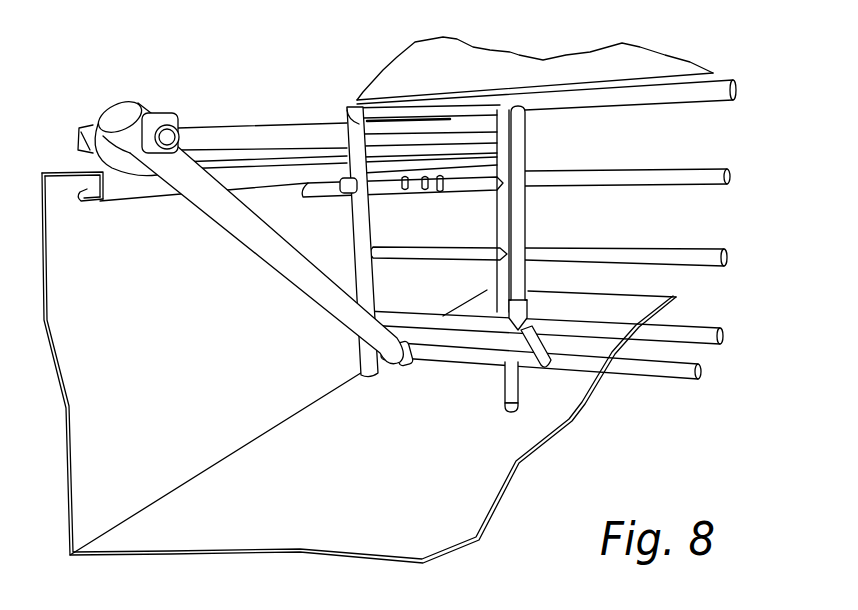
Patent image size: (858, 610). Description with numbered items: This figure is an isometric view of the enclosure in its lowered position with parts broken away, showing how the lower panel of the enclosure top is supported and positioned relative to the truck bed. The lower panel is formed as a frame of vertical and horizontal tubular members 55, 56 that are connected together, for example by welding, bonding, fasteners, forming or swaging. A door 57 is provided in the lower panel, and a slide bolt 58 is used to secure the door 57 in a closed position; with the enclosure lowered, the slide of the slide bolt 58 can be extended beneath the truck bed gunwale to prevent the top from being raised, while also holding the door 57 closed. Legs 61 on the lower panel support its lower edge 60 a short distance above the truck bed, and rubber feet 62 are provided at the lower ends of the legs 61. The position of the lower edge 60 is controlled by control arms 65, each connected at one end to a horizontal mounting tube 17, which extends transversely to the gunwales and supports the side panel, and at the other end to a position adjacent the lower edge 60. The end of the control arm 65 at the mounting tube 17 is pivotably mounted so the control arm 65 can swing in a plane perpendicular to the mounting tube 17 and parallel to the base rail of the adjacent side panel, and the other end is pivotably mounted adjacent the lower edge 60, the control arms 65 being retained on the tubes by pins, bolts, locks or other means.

The mounting tube 17 is at (172, 125).
The vertical tubular member 55 is at (362, 227).
The horizontal tubular member 56 is at (733, 90).
The door 57 is at (415, 224).
The slide bolt 58 is at (412, 187).
The lower edge 60 is at (668, 386).
The leg 61 is at (518, 388).
The rubber foot 62 is at (520, 410).
The control arm 65 is at (137, 120).